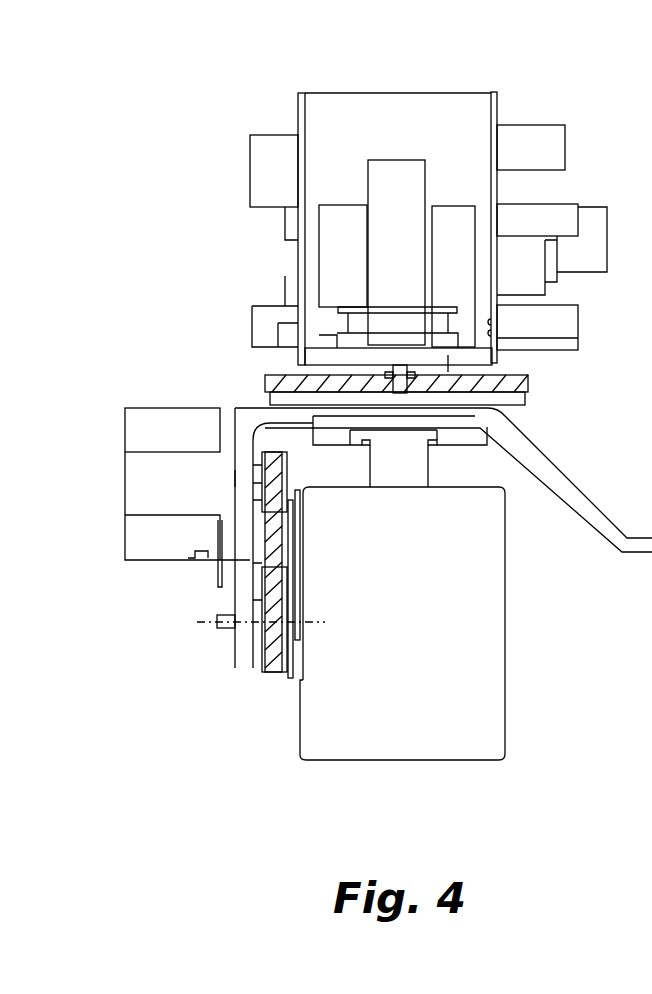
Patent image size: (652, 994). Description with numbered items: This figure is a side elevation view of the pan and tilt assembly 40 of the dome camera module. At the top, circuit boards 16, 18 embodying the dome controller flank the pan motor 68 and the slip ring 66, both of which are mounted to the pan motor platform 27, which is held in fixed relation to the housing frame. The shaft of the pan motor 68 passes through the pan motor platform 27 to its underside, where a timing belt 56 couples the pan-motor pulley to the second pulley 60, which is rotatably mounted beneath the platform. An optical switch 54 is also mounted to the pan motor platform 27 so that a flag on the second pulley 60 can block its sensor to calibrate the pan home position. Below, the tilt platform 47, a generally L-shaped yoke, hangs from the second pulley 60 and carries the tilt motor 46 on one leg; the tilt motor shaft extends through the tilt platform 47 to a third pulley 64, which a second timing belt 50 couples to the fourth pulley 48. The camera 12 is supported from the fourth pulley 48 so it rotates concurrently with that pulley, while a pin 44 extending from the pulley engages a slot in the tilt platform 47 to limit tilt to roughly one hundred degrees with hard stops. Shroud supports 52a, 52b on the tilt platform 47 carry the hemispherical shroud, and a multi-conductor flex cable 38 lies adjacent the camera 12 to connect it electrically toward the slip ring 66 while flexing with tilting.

The camera 12 is at (487, 667).
The circuit board 16 is at (298, 108).
The circuit board 18 is at (497, 108).
The pan motor platform 27 is at (497, 357).
The multi-conductor flex cable 38 is at (407, 470).
The pan and tilt assembly 40 is at (181, 396).
The pin 44 is at (258, 592).
The tilt motor 46 is at (140, 485).
The tilt platform 47 is at (243, 428).
The fourth pulley 48 is at (286, 680).
The second timing belt 50 is at (270, 677).
The shroud support 52a is at (195, 560).
The shroud support 52b is at (560, 508).
The optical switch 54 is at (398, 366).
The timing belt 56 is at (528, 383).
The second pulley 60 is at (520, 398).
The third pulley 64 is at (287, 485).
The slip ring 66 is at (396, 176).
The pan motor 68 is at (332, 212).